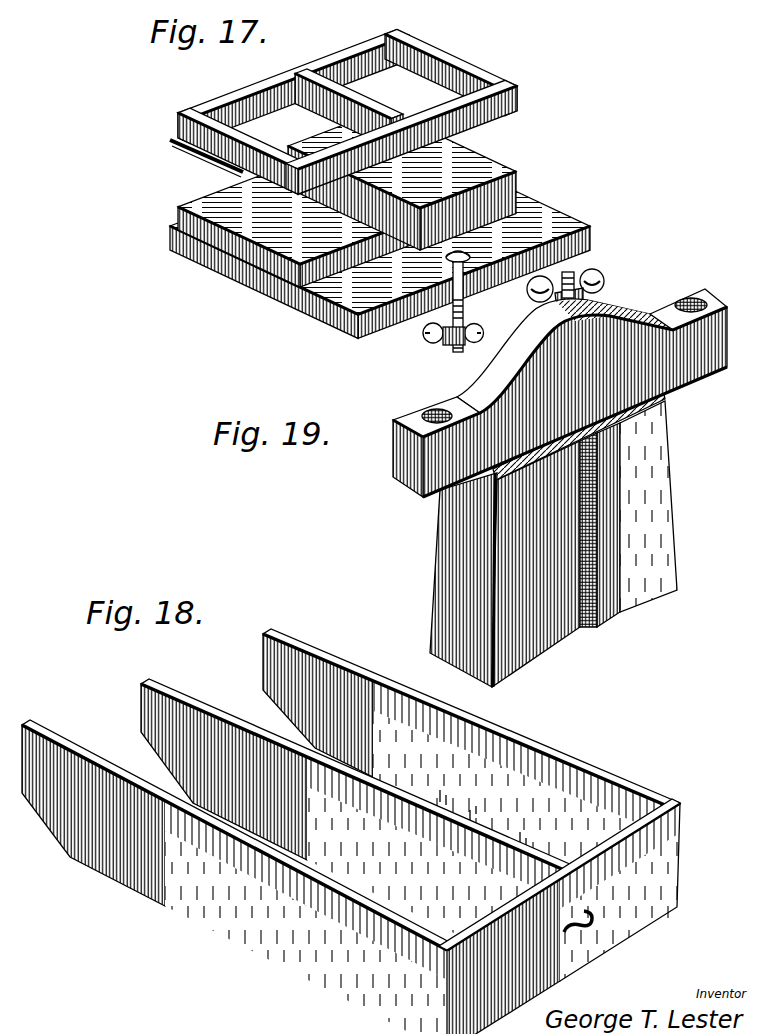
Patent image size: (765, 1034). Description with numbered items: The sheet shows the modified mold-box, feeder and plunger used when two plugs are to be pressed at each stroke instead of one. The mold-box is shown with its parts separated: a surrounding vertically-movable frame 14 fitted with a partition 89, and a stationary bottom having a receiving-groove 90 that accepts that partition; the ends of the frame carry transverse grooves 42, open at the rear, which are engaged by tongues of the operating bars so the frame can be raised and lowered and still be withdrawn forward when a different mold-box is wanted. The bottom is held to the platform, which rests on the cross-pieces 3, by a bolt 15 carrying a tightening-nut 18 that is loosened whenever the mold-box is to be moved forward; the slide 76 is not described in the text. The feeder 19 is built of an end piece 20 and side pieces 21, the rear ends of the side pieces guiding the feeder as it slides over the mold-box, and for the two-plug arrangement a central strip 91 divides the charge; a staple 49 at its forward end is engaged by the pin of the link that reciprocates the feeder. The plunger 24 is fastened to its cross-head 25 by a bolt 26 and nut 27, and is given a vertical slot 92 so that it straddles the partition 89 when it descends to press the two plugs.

In FIG. 17, the vertically-movable frame 14 is at (347, 112).
In FIG. 17, the partition 89 is at (335, 120).
In FIG. 17, the transverse grooves 42 is at (182, 148).
In FIG. 17, the cross-pieces 3 is at (294, 226).
In FIG. 17, the base board 76 is at (380, 238).
In FIG. 17, the receiving-groove 90 is at (420, 206).
In FIG. 17, the bolt 15 is at (464, 303).
In FIG. 17, the tightening-nut 18 is at (432, 338).
In FIG. 17, the bolt 26 is at (578, 286).
In FIG. 17, the nut 27 is at (600, 290).
In FIG. 19, the cross-head 25 is at (560, 393).
In FIG. 19, the plunger 24 is at (539, 538).
In FIG. 19, the vertical slot 92 is at (590, 630).
In FIG. 18, the side pieces 21 is at (351, 831).
In FIG. 18, the feeder 19 is at (559, 855).
In FIG. 18, the end piece 20 is at (563, 918).
In FIG. 18, the central strip 91 is at (368, 875).
In FIG. 18, the staple 49 is at (590, 936).